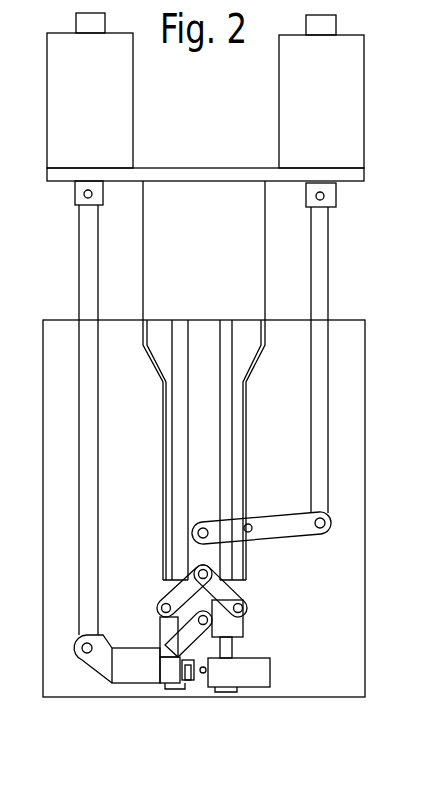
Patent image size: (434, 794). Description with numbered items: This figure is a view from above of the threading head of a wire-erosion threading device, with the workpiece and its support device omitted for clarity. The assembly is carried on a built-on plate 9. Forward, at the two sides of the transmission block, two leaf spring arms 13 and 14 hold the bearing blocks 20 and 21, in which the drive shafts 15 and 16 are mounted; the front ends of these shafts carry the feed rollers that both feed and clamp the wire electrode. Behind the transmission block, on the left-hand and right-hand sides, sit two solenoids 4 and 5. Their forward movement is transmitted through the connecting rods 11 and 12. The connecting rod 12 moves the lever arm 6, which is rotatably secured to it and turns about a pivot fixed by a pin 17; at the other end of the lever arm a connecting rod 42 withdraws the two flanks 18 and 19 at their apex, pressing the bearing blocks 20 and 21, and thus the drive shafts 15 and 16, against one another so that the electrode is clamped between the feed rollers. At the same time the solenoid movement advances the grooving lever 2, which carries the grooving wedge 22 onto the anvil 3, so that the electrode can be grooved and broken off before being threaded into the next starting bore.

The grooving lever 2 is at (132, 675).
The anvil 3 is at (270, 670).
The solenoid 4 is at (58, 103).
The solenoid 5 is at (350, 108).
The lever arm 6 is at (303, 532).
The built-on plate 9 is at (355, 635).
The connecting rod 11 is at (88, 348).
The connecting rod 12 is at (326, 352).
The leaf spring arm 13 is at (163, 406).
The leaf spring arm 14 is at (246, 406).
The drive shaft 15 is at (181, 446).
The drive shaft 16 is at (222, 446).
The pin 17 is at (250, 523).
The flank 18 is at (178, 600).
The flank 19 is at (228, 596).
The bearing block 20 is at (168, 626).
The bearing block 21 is at (238, 632).
The grooving wedge 22 is at (190, 680).
The connecting rod 42 is at (200, 555).